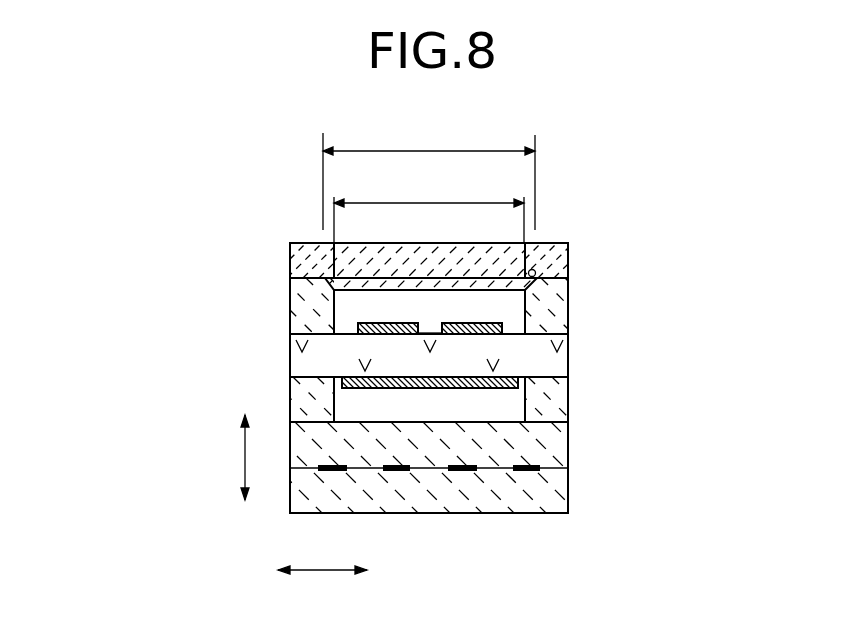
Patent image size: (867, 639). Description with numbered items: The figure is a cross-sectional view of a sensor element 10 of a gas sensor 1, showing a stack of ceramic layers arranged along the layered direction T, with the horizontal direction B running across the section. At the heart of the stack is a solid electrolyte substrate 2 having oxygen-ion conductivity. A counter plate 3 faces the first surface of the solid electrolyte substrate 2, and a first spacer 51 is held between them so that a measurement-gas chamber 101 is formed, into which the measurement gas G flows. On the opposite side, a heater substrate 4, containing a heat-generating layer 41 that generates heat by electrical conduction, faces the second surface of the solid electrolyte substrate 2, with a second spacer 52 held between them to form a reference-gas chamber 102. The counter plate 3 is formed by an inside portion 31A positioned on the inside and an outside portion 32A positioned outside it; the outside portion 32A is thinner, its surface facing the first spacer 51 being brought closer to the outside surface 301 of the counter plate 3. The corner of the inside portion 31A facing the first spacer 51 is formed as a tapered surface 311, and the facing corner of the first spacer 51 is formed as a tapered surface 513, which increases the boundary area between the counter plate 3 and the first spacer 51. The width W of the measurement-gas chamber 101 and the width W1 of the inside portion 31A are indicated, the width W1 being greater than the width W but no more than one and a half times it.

The gas sensor 1 is at (567, 528).
The sensor element 10 is at (485, 515).
The counter plate 3 is at (150, 152).
The inside portion 31A is at (375, 252).
The outside portion 32A is at (316, 262).
The outside surface 301 is at (483, 243).
The tapered surface 513 is at (532, 273).
The tapered surface 311 is at (527, 289).
The first spacer 51 is at (552, 325).
The solid electrolyte substrate 2 is at (545, 362).
The second spacer 52 is at (545, 400).
The heater substrate 4 is at (553, 455).
The heat-generating layer 41 is at (525, 470).
The measurement-gas chamber 101 is at (365, 301).
The measurement gas G is at (350, 311).
The reference-gas chamber 102 is at (343, 397).
The width of the inside portion W1 is at (429, 177).
The width of the measurement-gas chamber W is at (429, 210).
The layered direction T is at (233, 457).
The horizontal direction B is at (322, 555).